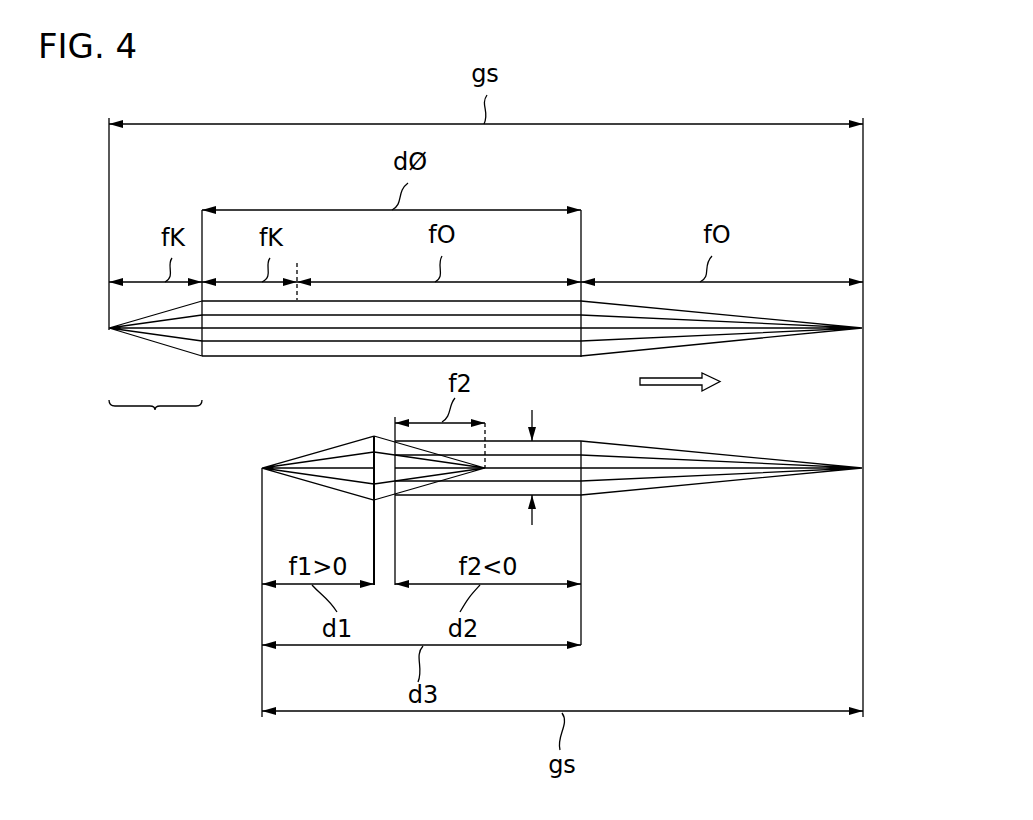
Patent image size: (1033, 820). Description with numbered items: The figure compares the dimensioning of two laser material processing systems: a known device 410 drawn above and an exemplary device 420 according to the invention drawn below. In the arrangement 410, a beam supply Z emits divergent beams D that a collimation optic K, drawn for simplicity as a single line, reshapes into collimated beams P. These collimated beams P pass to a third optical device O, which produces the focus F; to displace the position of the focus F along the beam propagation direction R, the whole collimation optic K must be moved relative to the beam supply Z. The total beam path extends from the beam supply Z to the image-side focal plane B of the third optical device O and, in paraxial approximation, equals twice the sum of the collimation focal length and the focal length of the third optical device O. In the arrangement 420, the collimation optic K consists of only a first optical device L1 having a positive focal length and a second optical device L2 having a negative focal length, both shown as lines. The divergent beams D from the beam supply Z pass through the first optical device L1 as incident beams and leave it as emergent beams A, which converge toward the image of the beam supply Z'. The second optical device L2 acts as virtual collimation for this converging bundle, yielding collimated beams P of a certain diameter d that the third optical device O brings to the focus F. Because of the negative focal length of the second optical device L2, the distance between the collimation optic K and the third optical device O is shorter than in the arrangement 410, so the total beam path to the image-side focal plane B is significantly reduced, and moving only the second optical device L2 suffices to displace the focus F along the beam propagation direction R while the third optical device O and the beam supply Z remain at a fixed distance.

The known device 410 is at (110, 355).
The exemplary device 420 is at (196, 485).
The beam supply Z is at (158, 399).
The divergent beams D is at (145, 345).
The collimation optic K is at (155, 419).
The collimated beams P is at (255, 360).
The third optical device O is at (581, 360).
The focus F is at (855, 338).
The beam propagation direction R is at (670, 388).
The image-side focal plane B is at (863, 216).
The first optical device L1 is at (374, 500).
The second optical device L2 is at (395, 500).
The emergent beams A is at (378, 432).
The image of the beam supply Z' is at (485, 504).
The diameter of the beams d is at (535, 475).